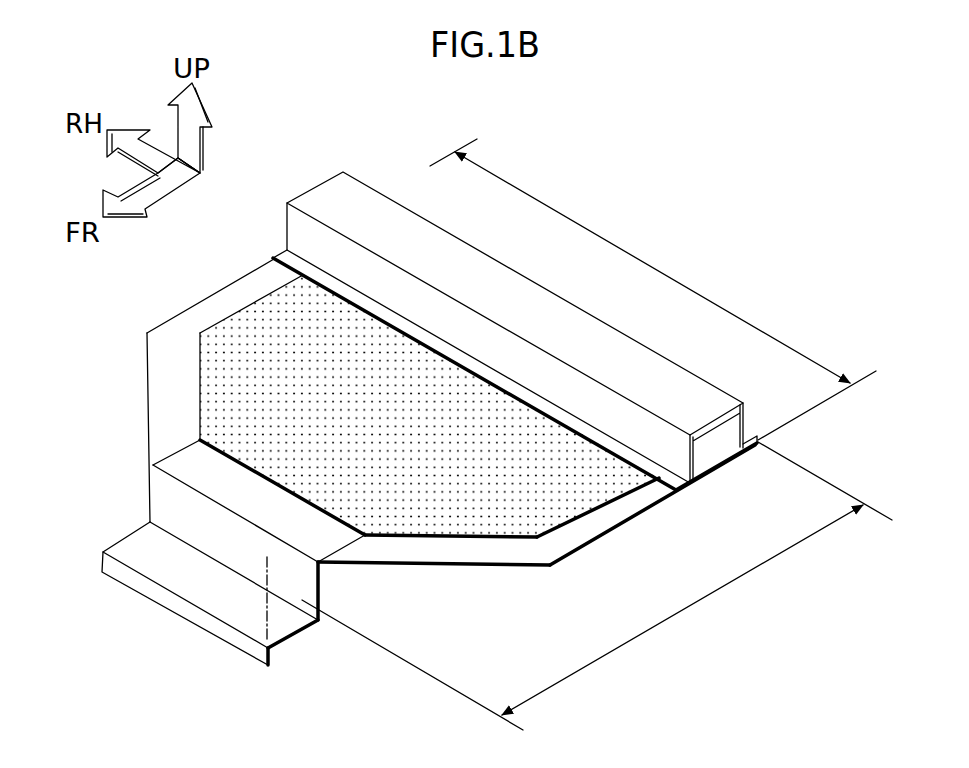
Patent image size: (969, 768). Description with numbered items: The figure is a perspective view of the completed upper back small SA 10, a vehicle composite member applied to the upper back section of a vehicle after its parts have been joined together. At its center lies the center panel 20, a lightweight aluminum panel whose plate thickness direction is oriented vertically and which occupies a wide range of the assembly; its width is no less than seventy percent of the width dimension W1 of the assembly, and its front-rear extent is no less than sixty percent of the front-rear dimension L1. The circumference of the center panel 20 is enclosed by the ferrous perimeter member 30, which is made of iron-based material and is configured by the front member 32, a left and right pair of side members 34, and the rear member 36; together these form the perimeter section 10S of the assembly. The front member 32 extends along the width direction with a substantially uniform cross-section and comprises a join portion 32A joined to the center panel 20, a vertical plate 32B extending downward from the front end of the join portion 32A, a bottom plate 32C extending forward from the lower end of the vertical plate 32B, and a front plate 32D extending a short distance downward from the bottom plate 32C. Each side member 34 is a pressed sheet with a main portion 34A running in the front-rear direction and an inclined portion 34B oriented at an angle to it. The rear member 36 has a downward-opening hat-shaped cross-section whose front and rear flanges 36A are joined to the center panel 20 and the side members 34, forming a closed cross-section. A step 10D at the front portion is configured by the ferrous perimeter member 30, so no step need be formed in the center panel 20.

The upper back small SA 10 is at (555, 630).
The step 10D is at (165, 545).
The perimeter section 10S is at (498, 552).
The center panel 20 is at (370, 393).
The ferrous perimeter member 30 is at (420, 445).
The front member 32 is at (208, 637).
The join portion 32A is at (187, 462).
The vertical plate 32B is at (305, 583).
The bottom plate 32C is at (285, 623).
The front plate 32D is at (273, 658).
The side member 34 is at (145, 353).
The main portion 34A is at (227, 300).
The inclined portion 34B is at (165, 402).
The rear member 36 is at (577, 305).
The flange 36A is at (592, 434).
The width dimension W1 is at (540, 203).
The front-rear dimension L1 is at (725, 588).